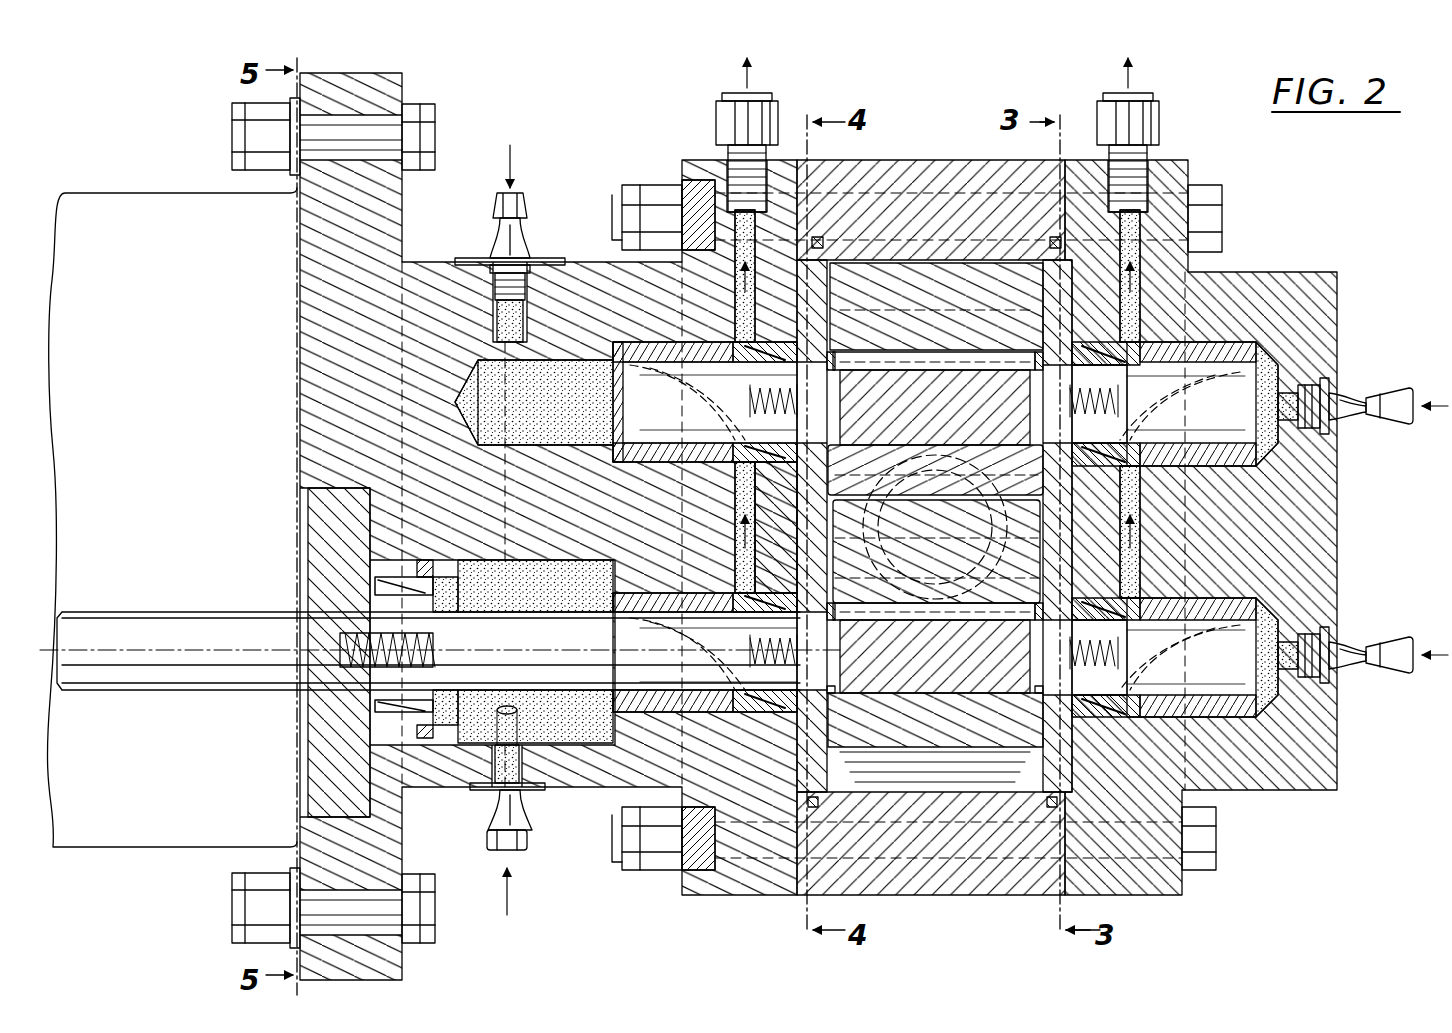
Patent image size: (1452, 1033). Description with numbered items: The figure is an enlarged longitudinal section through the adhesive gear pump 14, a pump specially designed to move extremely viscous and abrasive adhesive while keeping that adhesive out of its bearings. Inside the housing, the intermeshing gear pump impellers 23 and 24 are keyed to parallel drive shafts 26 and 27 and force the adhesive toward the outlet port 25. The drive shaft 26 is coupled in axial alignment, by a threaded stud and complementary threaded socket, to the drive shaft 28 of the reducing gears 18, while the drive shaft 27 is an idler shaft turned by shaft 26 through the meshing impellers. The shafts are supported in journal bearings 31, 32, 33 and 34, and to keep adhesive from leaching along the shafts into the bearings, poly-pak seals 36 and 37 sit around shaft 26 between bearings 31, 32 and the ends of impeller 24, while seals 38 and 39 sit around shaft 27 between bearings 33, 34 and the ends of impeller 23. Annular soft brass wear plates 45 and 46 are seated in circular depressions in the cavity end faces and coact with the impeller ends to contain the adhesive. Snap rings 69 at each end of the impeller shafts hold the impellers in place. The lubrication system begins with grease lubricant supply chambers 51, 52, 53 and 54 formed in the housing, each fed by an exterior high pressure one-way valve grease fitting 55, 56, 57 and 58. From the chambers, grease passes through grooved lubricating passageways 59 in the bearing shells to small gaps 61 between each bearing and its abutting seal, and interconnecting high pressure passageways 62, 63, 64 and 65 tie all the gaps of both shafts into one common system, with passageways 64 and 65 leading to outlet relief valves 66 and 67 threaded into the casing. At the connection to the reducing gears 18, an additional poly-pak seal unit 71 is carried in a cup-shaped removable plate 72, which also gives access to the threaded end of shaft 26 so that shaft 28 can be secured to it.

The adhesive gear pump 14 is at (1275, 268).
The reducing gears 18 is at (210, 203).
The gear pump impeller 23 is at (962, 705).
The gear pump impeller 24 is at (990, 458).
The outlet port 25 is at (936, 529).
The drive shaft 26 is at (922, 656).
The drive shaft 27 is at (922, 406).
The drive shaft 28 is at (125, 625).
The journal bearing 31 is at (690, 612).
The journal bearing 32 is at (1148, 610).
The journal bearing 33 is at (682, 358).
The journal bearing 34 is at (1150, 360).
The poly-pak seal 36 is at (775, 593).
The poly-pak seal 37 is at (1095, 598).
The poly-pak seal 38 is at (775, 342).
The poly-pak seal 39 is at (1095, 344).
The wear plate 45 is at (810, 243).
The wear plate 46 is at (795, 740).
The grease lubricant supply chamber 51 is at (510, 440).
The grease lubricant supply chamber 52 is at (515, 612).
The grease lubricant supply chamber 53 is at (1272, 385).
The grease lubricant supply chamber 54 is at (1272, 635).
The grease fitting 55 is at (495, 235).
The grease fitting 56 is at (490, 812).
The grease fitting 57 is at (1382, 390).
The grease fitting 58 is at (1380, 635).
The grease lubricating passageway 59 is at (670, 412).
The gap 61 is at (745, 362).
The interconnecting lubricant passageway 62 is at (738, 545).
The interconnecting lubricant passageway 63 is at (1140, 545).
The interconnecting lubricant passageway 64 is at (738, 312).
The interconnecting lubricant passageway 65 is at (1140, 305).
The high pressure outlet relief valve 66 is at (720, 160).
The high pressure outlet relief valve 67 is at (1152, 160).
The snap ring 69 is at (835, 352).
The poly-pak seal unit 71 is at (410, 590).
The cup-shaped removable plate 72 is at (330, 548).